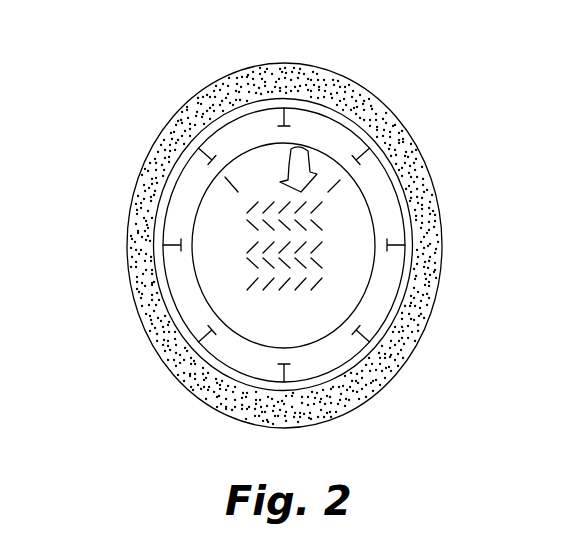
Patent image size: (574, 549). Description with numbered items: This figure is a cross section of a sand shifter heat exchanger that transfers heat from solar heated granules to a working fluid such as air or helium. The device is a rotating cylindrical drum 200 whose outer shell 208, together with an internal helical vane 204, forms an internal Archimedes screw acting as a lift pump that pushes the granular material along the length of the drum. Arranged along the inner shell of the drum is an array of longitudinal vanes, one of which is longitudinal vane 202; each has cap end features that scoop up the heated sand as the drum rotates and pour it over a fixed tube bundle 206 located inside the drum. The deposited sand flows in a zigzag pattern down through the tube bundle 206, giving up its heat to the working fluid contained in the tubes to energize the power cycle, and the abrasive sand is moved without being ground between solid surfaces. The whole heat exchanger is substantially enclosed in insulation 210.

The rotating cylindrical drum 200 is at (95, 66).
The longitudinal vane 202 is at (368, 132).
The internal helical vane 204 is at (180, 210).
The tube bundle 206 is at (310, 246).
The outer shell of the drum 208 is at (168, 300).
The insulation 210 is at (395, 348).